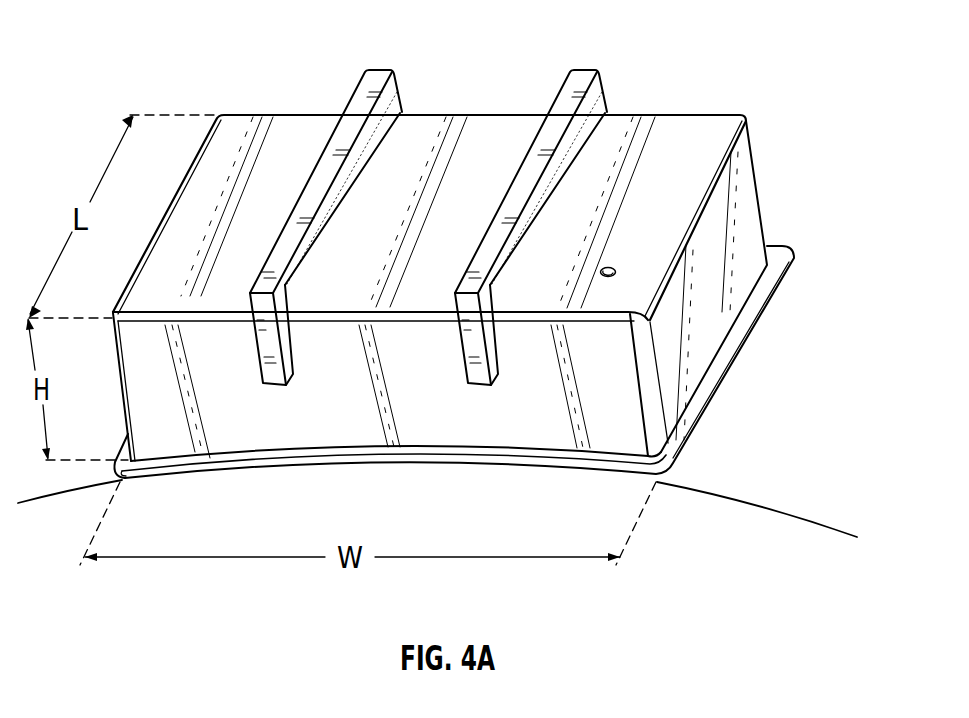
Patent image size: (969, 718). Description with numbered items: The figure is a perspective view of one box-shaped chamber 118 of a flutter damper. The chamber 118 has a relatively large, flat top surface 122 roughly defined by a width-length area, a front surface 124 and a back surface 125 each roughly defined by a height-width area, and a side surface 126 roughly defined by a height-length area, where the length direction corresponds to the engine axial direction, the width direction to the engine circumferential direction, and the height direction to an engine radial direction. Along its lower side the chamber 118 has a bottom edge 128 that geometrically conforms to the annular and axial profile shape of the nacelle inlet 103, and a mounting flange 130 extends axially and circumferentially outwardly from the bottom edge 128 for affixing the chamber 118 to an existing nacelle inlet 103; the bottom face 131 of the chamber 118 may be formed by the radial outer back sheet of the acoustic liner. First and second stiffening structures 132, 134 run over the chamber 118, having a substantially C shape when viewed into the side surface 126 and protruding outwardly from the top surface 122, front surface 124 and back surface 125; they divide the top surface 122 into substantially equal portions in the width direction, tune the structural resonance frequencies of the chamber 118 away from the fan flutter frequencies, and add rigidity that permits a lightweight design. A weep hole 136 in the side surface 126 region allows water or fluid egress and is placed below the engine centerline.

The nacelle inlet 103 is at (795, 515).
The chamber 118 is at (714, 62).
The top surface 122 is at (188, 222).
The front surface 124 is at (152, 393).
The back surface 125 is at (301, 98).
The side surface 126 is at (742, 242).
The bottom edge 128 is at (438, 446).
The mounting flange 130 is at (323, 447).
The bottom face 131 is at (210, 480).
The first stiffening structure 132 is at (381, 73).
The second stiffening structure 134 is at (586, 73).
The weep hole 136 is at (608, 258).